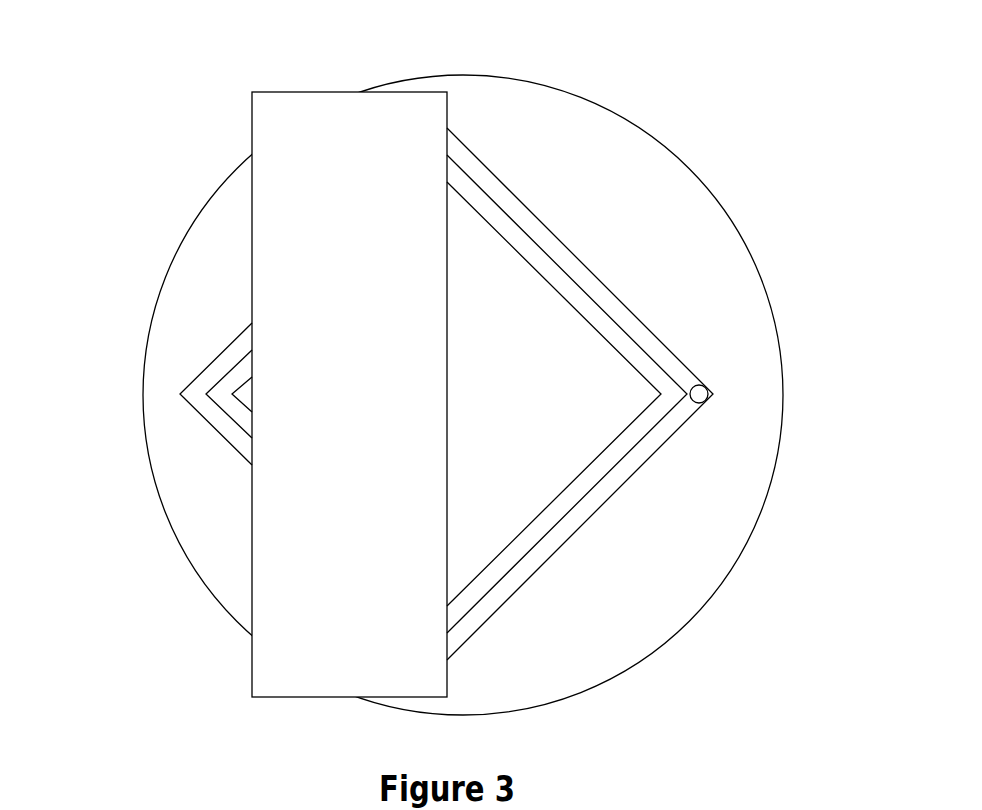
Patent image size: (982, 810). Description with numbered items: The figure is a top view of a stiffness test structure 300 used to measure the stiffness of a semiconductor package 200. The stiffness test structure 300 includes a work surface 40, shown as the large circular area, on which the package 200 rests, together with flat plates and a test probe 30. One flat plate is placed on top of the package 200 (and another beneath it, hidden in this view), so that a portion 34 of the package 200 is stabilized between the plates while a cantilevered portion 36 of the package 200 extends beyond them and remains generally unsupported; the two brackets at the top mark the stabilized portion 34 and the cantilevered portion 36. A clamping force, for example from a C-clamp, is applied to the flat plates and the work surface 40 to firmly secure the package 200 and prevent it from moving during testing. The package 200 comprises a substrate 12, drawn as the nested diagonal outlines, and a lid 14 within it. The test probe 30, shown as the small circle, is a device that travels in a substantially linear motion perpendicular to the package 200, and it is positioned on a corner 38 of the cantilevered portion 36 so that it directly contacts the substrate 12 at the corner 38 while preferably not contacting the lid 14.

The stiffness test structure 300 is at (110, 92).
The package 200 is at (213, 351).
The substrate 12 is at (620, 312).
The lid 14 is at (534, 413).
The test probe 30 is at (702, 386).
The corner 38 is at (720, 394).
The work surface 40 is at (591, 628).
The portion 34 is at (447, 60).
The cantilevered portion 36 is at (447, 60).